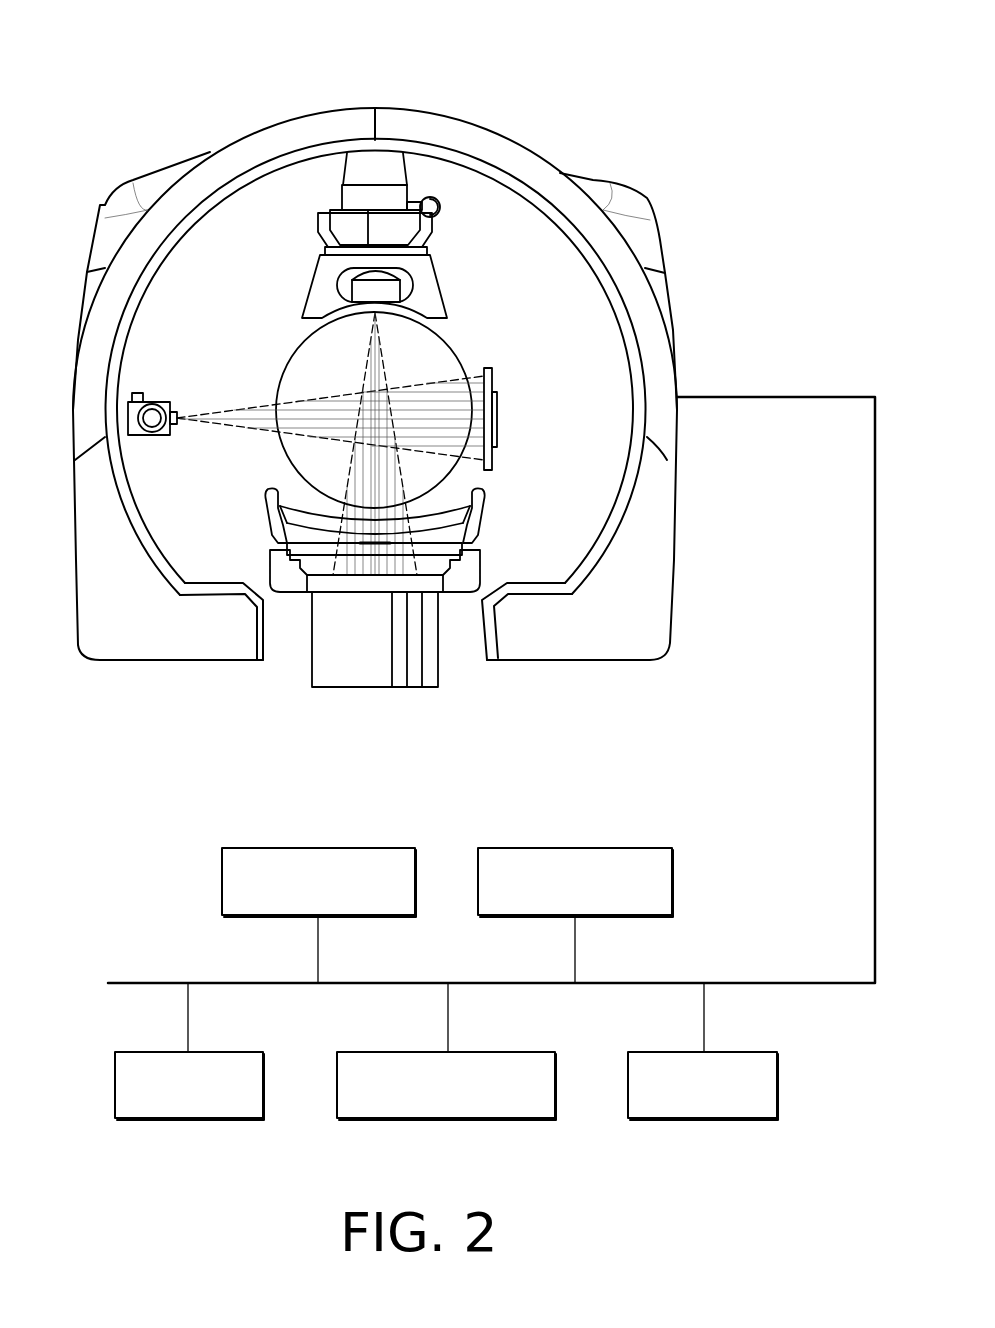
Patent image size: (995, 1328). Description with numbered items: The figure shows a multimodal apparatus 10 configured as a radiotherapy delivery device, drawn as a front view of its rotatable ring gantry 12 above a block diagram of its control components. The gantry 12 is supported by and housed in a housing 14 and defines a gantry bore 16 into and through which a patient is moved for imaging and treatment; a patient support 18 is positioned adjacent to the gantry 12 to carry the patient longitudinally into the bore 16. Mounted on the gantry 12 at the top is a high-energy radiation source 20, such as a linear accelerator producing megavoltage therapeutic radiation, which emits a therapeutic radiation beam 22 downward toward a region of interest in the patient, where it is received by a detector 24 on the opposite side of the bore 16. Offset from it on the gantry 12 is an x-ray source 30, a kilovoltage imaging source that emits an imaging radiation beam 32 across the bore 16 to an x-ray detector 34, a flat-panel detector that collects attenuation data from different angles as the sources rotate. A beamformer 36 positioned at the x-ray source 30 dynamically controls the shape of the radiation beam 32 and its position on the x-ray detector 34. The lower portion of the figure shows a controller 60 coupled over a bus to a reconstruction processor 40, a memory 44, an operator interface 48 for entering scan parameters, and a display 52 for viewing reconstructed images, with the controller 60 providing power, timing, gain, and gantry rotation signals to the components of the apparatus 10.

The multimodal apparatus 10 is at (118, 93).
The rotatable gantry 12 is at (587, 238).
The housing 14 is at (102, 201).
The gantry bore 16 is at (445, 328).
The patient support 18 is at (285, 668).
The high-energy radiation source 20 is at (340, 168).
The therapeutic radiation beam 22 is at (347, 347).
The detector 24 is at (493, 535).
The x-ray source 30 is at (132, 383).
The radiation beam 32 is at (263, 437).
The x-ray detector 34 is at (495, 378).
The beamformer 36 is at (170, 403).
The reconstruction processor 40 is at (447, 1118).
The memory 44 is at (706, 1118).
The operator interface 48 is at (582, 848).
The display 52 is at (188, 1120).
The controller 60 is at (310, 848).